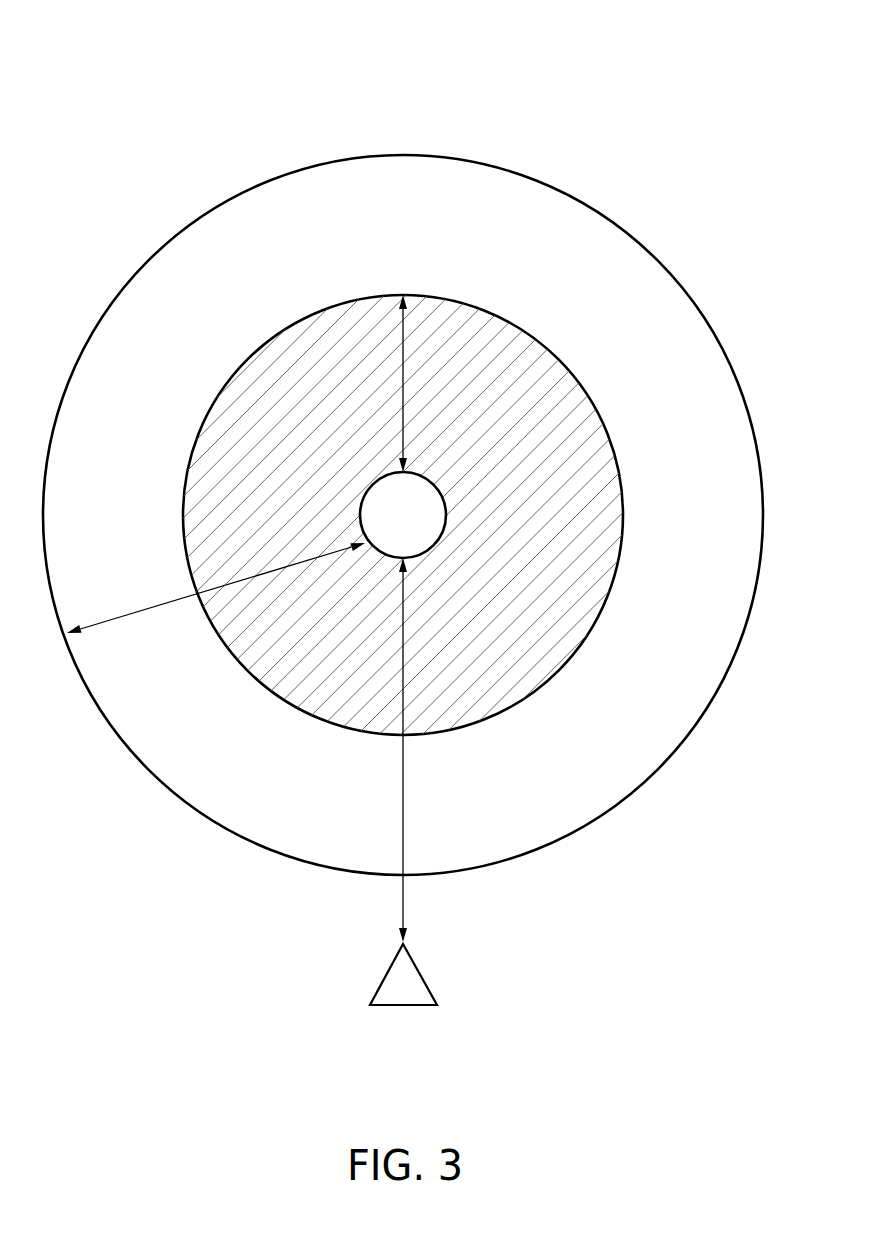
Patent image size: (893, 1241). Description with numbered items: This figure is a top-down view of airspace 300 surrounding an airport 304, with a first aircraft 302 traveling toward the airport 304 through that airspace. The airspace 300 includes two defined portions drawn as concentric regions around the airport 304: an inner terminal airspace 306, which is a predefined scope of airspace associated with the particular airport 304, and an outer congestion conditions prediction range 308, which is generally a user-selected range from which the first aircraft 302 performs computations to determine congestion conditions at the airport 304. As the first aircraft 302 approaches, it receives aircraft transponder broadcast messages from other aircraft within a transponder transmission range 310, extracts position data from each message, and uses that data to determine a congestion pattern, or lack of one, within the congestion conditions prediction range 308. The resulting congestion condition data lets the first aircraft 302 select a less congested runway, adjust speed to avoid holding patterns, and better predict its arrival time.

The airspace 300 is at (735, 50).
The first aircraft 302 is at (405, 1005).
The airport 304 is at (429, 529).
The terminal airspace 306 is at (448, 297).
The congestion conditions prediction range 308 is at (555, 186).
The transponder transmission range 310 is at (403, 791).